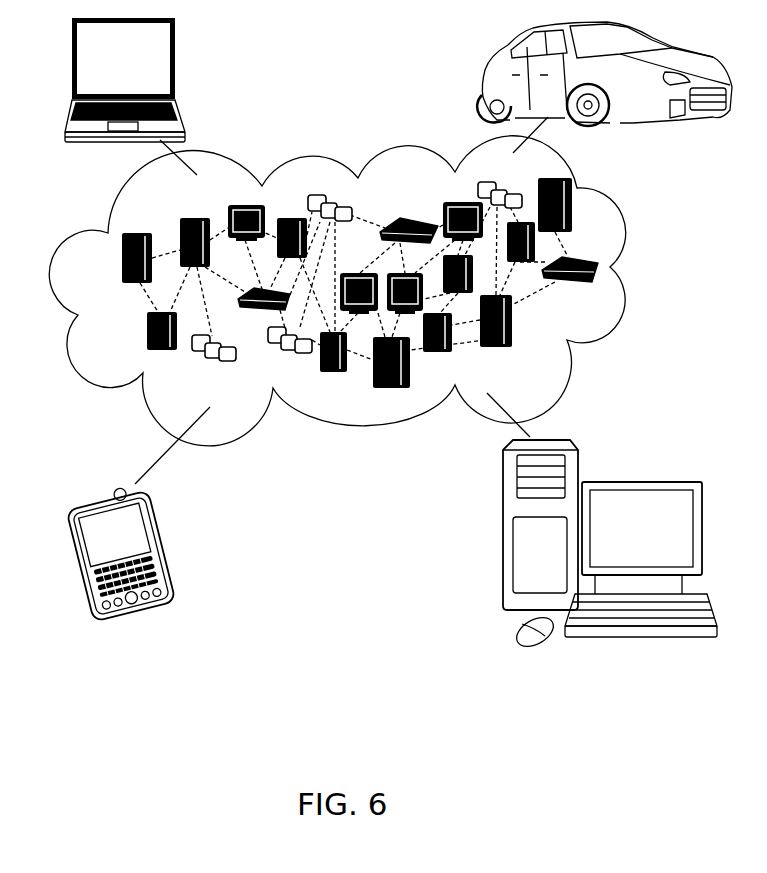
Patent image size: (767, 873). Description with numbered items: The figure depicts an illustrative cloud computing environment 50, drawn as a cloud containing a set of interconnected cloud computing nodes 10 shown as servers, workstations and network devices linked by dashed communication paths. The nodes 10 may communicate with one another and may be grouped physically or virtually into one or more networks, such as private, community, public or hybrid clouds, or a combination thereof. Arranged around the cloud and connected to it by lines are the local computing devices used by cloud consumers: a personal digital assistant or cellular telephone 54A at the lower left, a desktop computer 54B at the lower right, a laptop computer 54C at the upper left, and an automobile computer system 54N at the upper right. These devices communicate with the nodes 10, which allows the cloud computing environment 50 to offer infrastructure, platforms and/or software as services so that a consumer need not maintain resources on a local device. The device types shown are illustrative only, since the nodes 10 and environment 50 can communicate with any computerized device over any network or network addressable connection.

The cloud computing nodes 10 is at (603, 292).
The cloud computing environment 50 is at (632, 267).
The personal digital assistant or cellular telephone 54A is at (163, 551).
The desktop computer 54B is at (638, 478).
The laptop computer 54C is at (177, 64).
The automobile computer system 54N is at (483, 78).